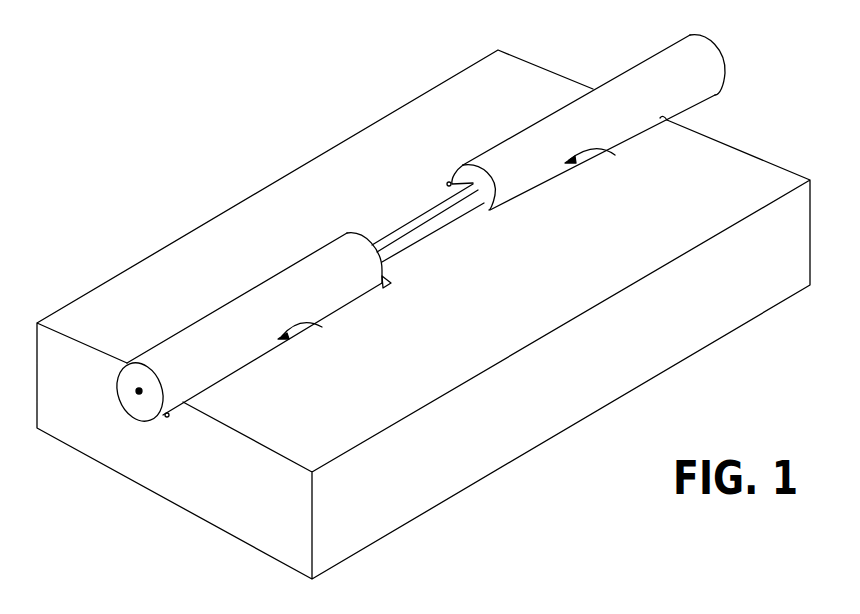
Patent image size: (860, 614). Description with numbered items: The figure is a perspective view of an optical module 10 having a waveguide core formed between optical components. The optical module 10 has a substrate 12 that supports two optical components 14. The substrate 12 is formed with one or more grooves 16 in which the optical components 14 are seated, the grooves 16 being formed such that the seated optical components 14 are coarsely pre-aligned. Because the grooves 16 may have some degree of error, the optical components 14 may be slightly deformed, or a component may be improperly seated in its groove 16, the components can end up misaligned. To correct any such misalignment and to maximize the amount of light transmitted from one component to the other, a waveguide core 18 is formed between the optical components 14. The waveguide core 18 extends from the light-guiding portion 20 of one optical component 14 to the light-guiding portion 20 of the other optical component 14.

The optical module 10 is at (283, 135).
The substrate 12 is at (240, 507).
The optical component 14 is at (280, 283).
The groove 16 is at (460, 252).
The waveguide core 18 is at (442, 230).
The light-guiding portion 20 is at (136, 391).